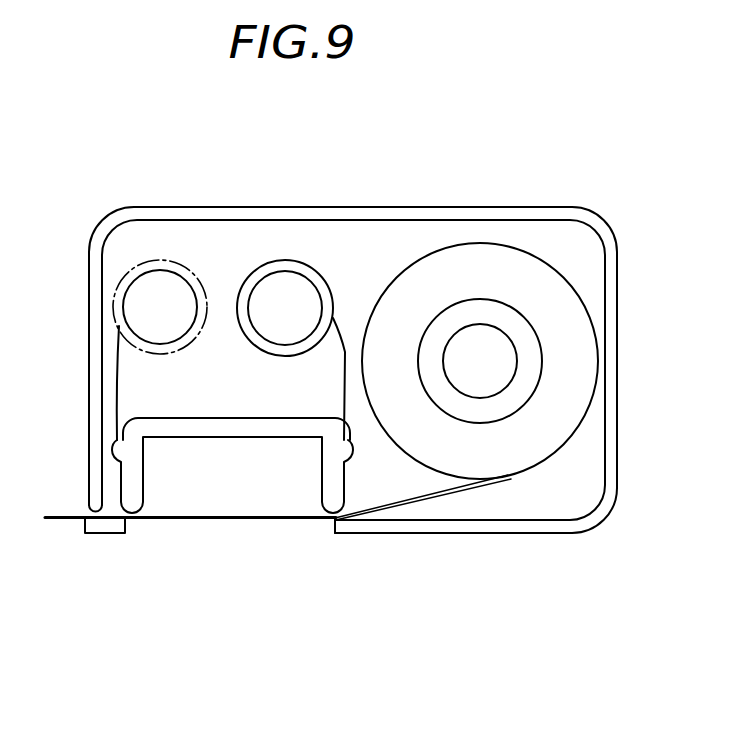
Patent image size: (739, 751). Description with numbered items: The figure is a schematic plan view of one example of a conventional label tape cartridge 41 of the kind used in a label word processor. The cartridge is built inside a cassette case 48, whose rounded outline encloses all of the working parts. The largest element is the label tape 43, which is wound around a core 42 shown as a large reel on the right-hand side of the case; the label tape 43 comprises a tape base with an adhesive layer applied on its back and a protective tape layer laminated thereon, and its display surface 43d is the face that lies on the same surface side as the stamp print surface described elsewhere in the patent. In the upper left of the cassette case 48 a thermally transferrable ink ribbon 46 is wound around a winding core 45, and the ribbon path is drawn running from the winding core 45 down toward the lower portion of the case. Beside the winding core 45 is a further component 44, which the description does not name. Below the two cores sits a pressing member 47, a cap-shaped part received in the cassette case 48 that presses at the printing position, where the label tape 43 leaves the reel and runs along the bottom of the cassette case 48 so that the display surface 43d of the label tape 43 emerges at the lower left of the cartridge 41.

The label tape cartridge 41 is at (432, 187).
The core 42 is at (492, 327).
The label tape 43 is at (427, 500).
The display surface 43d is at (61, 513).
The guide roller 44 is at (293, 283).
The winding core 45 is at (165, 285).
The thermally transferrable ink ribbon 46 is at (340, 337).
The pressing member 47 is at (218, 417).
The cassette case 48 is at (603, 515).